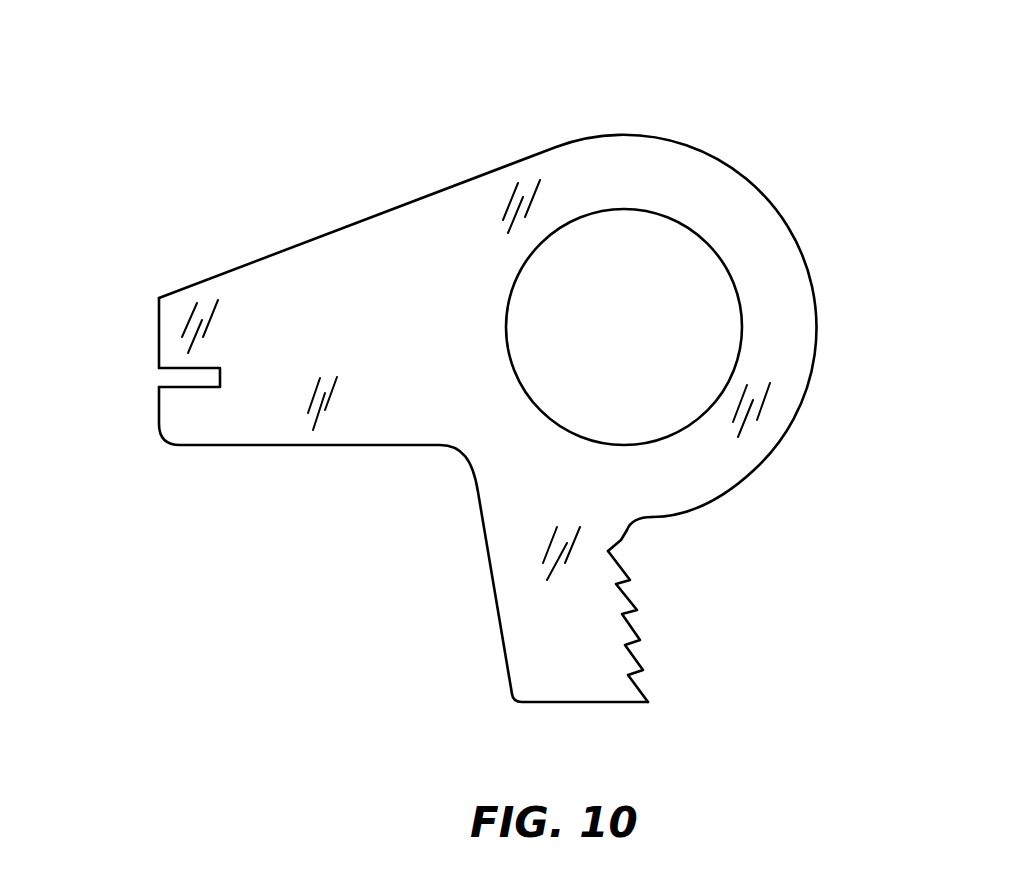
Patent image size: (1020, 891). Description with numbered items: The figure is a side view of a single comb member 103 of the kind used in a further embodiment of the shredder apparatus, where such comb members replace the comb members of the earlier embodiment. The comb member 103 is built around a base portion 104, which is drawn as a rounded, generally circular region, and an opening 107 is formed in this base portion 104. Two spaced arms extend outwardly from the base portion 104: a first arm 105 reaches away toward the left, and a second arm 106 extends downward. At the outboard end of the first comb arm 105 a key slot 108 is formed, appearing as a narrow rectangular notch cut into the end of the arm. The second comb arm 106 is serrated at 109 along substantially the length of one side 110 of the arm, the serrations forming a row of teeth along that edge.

The comb member 103 is at (712, 152).
The base portion 104 is at (790, 262).
The first arm 105 is at (300, 265).
The second arm 106 is at (505, 563).
The opening 107 is at (649, 343).
The key slot 108 is at (172, 378).
The serrations 109 is at (633, 628).
The side 110 is at (623, 540).